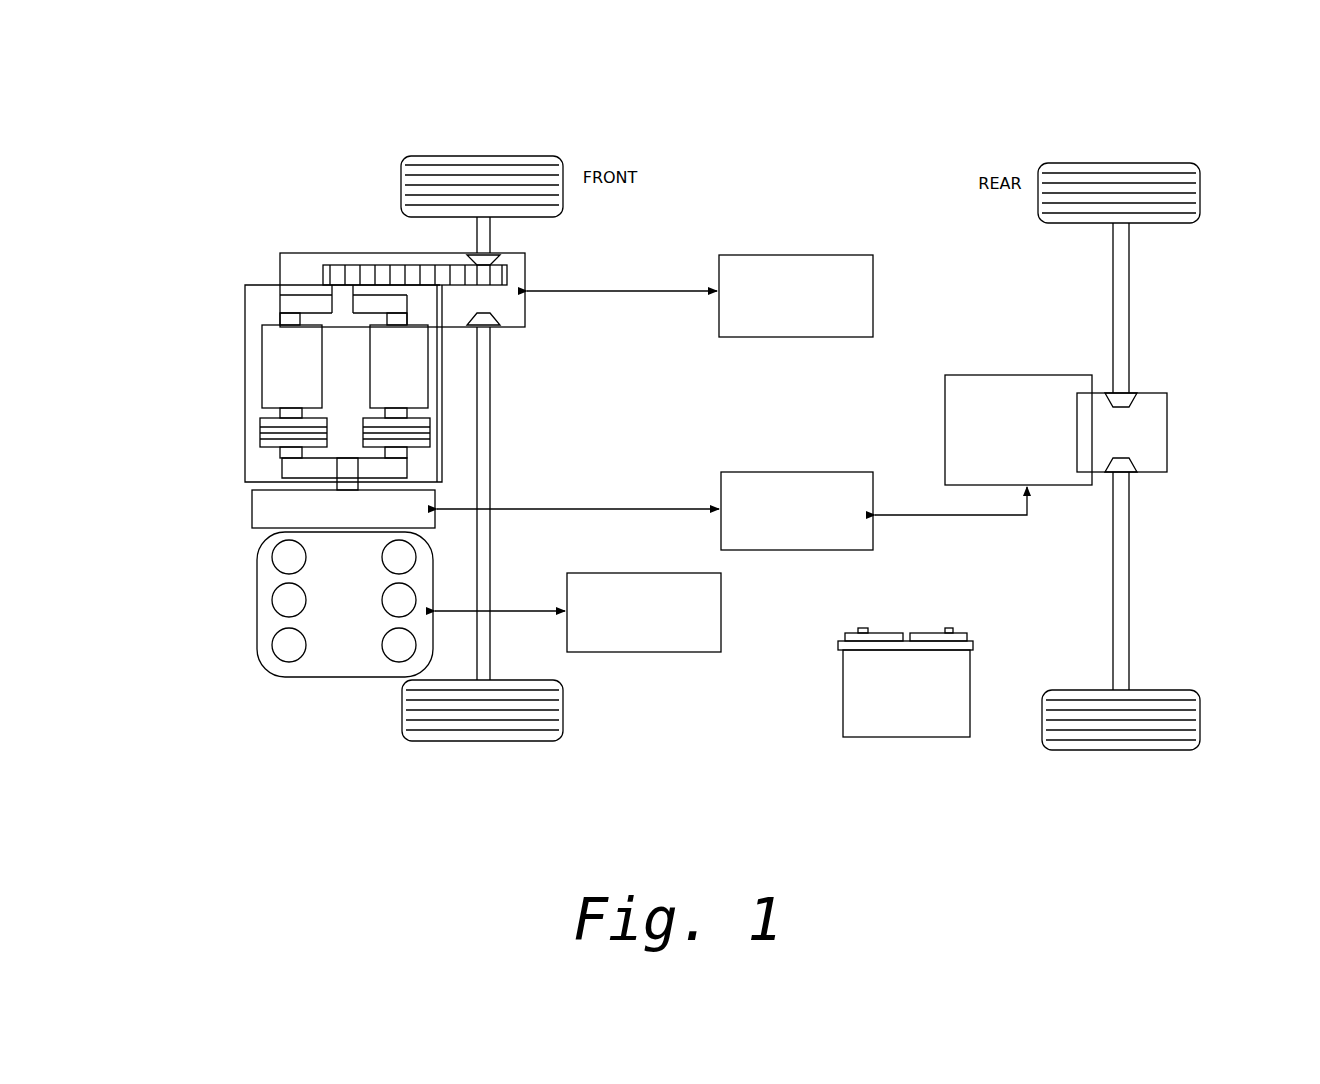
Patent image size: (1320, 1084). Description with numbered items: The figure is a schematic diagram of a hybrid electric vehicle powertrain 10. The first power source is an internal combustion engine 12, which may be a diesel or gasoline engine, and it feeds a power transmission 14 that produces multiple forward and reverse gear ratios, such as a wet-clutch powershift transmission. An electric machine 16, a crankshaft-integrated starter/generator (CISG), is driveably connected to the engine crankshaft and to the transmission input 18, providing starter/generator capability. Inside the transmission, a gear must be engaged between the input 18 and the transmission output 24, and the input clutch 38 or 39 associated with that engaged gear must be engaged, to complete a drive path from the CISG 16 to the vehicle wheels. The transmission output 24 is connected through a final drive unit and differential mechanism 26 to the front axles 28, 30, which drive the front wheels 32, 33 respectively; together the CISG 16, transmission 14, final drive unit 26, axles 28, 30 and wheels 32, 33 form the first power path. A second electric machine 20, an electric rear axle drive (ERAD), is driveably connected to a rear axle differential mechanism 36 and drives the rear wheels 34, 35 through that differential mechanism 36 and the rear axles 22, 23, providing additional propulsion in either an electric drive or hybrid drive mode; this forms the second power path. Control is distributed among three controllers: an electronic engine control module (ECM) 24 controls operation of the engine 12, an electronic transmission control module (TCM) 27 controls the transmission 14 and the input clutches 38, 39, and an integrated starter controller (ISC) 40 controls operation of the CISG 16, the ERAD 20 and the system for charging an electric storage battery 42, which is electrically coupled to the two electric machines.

The powertrain 10 is at (938, 116).
The internal combustion engine 12 is at (358, 678).
The power transmission 14 is at (245, 462).
The electric machine (CISG) 16 is at (252, 513).
The transmission input 18 is at (349, 469).
The electric machine (ERAD) 20 is at (1062, 375).
The rear axle 22 is at (1130, 278).
The rear axle 23 is at (1130, 628).
The transmission output / engine control module (ECM) 24 is at (342, 300).
The final drive unit and differential mechanism 26 is at (315, 253).
The transmission control module (TCM) 27 is at (808, 255).
The front axle 28 is at (477, 240).
The front axle 30 is at (492, 535).
The front wheel 32 is at (478, 155).
The front wheel 33 is at (450, 741).
The rear wheel 34 is at (1140, 163).
The rear wheel 35 is at (1107, 750).
The rear axle differential mechanism 36 is at (1167, 435).
The input clutch 38 is at (430, 443).
The input clutch 39 is at (260, 433).
The integrated starter controller (ISC) 40 is at (798, 472).
The electric storage battery 42 is at (928, 737).